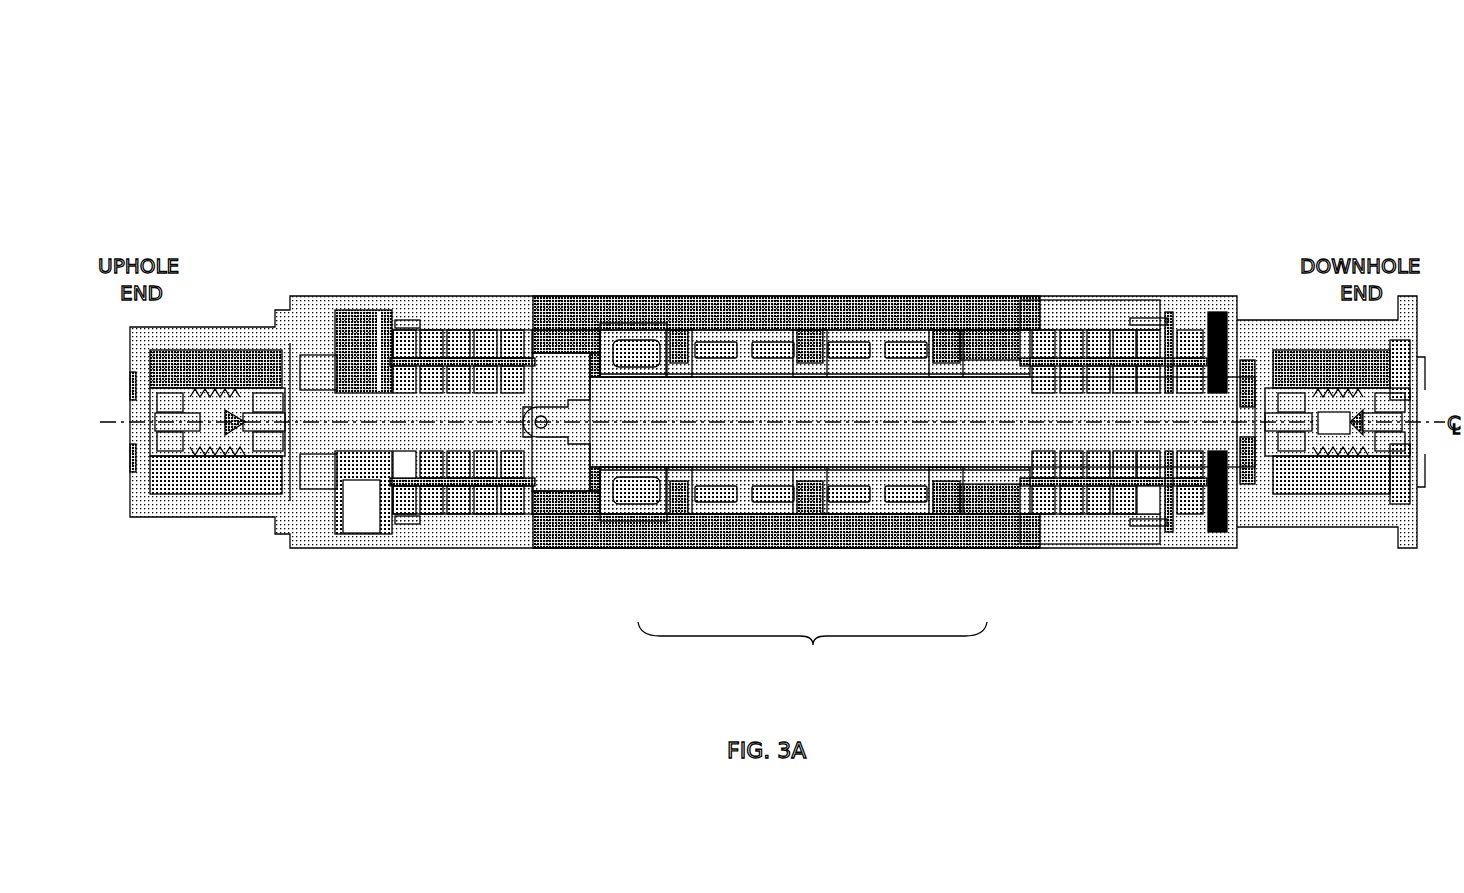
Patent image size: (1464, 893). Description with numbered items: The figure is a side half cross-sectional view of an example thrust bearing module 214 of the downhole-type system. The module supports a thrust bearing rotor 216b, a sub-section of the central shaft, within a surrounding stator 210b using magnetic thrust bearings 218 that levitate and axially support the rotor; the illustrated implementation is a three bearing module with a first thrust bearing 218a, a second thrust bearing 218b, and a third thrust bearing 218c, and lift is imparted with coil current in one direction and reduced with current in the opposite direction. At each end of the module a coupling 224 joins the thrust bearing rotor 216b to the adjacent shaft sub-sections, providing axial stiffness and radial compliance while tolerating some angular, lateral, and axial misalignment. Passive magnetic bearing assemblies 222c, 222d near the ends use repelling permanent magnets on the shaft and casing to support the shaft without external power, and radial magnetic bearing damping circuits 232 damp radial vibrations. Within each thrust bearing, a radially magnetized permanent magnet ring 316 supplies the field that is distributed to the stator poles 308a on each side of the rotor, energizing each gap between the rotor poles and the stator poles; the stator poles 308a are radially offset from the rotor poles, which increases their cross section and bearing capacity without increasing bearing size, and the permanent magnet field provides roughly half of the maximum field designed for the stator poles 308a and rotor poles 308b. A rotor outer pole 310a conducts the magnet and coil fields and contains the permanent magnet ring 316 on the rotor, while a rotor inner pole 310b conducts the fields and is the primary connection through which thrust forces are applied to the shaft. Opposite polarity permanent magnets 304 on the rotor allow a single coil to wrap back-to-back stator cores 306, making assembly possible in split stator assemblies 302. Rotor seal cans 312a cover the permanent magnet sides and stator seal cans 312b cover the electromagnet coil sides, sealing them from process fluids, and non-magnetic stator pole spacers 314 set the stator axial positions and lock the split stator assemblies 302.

The thrust bearing module 214 is at (330, 138).
The radial magnetic bearing damping circuit 232 is at (380, 345).
The passive magnetic bearing assembly 222c is at (462, 343).
The passive magnetic bearing assembly 222d is at (1093, 343).
The rotor outer pole 310a is at (660, 350).
The rotor inner pole 310b is at (665, 345).
The rotor seal can 312a is at (795, 494).
The thrust bearing stator seal can 312b is at (656, 368).
The surrounding stator 210b is at (744, 345).
The back-to-back stator core 306 is at (913, 345).
The radially magnetized permanent magnet ring 316 is at (776, 355).
The split stator assembly 302 is at (856, 316).
The permanent magnet 304 is at (973, 350).
The coupling 224 is at (217, 457).
The stator pole 308a is at (627, 518).
The rotor pole 308b is at (667, 536).
The first thrust bearing 218a is at (674, 507).
The second thrust bearing 218b is at (810, 507).
The third thrust bearing 218c is at (947, 507).
The magnetic thrust bearing 218 is at (812, 649).
The stator pole spacer 314 is at (965, 512).
The thrust bearing rotor 216b is at (1238, 428).